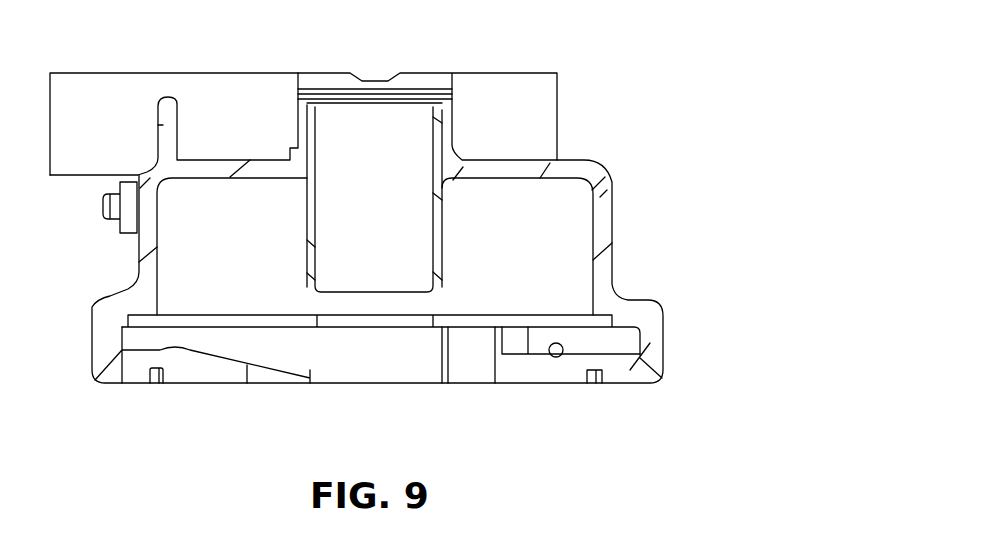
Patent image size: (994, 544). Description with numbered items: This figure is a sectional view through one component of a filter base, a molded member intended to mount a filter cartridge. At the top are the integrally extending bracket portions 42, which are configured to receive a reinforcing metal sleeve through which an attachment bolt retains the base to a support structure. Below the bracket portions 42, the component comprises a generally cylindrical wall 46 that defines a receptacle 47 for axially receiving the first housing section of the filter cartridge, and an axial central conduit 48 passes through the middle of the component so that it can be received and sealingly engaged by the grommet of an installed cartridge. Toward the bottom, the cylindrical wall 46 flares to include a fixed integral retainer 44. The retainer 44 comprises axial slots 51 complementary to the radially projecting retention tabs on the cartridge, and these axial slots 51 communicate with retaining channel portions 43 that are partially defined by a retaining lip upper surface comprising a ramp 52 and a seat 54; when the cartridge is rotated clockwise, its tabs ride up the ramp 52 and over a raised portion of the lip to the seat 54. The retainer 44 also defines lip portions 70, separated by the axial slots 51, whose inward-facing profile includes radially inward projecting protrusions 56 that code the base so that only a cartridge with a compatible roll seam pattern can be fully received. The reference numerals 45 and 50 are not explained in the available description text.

The bracket portions 42 is at (540, 118).
The retaining channel portions 43 is at (213, 343).
The retainer 44 is at (650, 340).
The shaft 45 is at (343, 123).
The cylindrical wall 46 is at (603, 237).
The receptacle 47 is at (247, 232).
The axial central conduit 48 is at (307, 260).
The base 50 is at (202, 373).
The axial slots 51 is at (393, 368).
The ramp 52 is at (253, 362).
The seat 54 is at (559, 360).
The protrusions 56 is at (160, 383).
The lip portions 70 is at (538, 365).